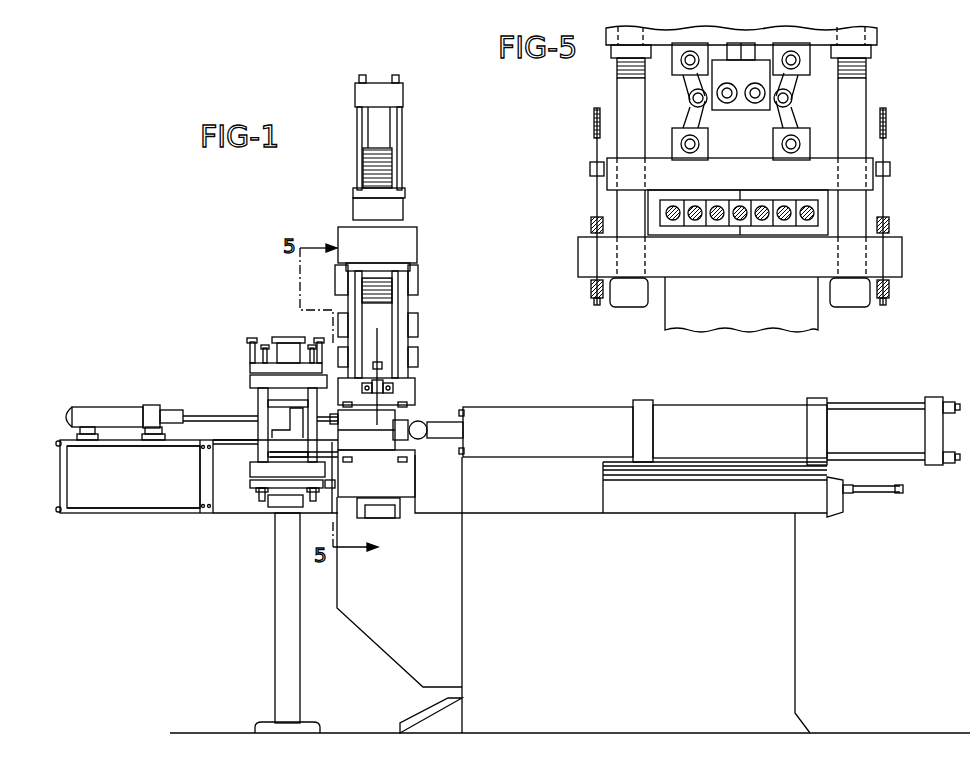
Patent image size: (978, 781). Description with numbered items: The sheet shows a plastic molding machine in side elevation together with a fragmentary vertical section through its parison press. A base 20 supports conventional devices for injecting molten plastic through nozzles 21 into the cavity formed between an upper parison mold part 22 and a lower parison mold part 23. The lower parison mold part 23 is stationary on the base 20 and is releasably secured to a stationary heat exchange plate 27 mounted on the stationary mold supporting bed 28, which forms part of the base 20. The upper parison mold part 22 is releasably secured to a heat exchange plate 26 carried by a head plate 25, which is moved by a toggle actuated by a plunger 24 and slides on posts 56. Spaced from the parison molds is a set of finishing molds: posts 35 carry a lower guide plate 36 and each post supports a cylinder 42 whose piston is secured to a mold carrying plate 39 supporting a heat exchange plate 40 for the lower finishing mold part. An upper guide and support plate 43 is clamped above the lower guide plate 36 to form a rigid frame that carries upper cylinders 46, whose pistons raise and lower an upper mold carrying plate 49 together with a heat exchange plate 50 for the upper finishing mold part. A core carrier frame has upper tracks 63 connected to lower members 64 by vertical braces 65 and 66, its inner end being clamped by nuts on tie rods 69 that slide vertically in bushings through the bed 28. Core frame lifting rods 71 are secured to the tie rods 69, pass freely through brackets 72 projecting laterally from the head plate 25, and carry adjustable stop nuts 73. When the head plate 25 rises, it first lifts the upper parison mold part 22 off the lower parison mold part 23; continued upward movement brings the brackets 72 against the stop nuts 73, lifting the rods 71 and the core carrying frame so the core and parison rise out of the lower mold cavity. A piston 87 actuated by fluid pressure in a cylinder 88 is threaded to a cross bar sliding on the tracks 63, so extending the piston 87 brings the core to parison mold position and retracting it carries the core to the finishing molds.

In FIG. 1, the base 20 is at (397, 652).
In FIG. 5, the base 20 is at (777, 328).
In FIG. 1, the nozzle 21 is at (420, 440).
In FIG. 1, the upper parison mold part 22 is at (412, 412).
In FIG. 5, the upper parison mold part 22 is at (693, 204).
In FIG. 1, the lower parison mold part 23 is at (393, 458).
In FIG. 5, the lower parison mold part 23 is at (717, 224).
In FIG. 5, the plunger 24 is at (740, 100).
In FIG. 1, the head plate 25 is at (412, 395).
In FIG. 5, the head plate 25 is at (753, 172).
In FIG. 5, the heat exchange plate 26 is at (808, 190).
In FIG. 5, the stationary heat exchange plate 27 is at (770, 230).
In FIG. 1, the stationary mold supporting bed 28 is at (388, 497).
In FIG. 5, the stationary mold supporting bed 28 is at (726, 268).
In FIG. 1, the posts 35 is at (282, 683).
In FIG. 1, the lower guide plate 36 is at (262, 503).
In FIG. 1, the mold carrying plate 39 is at (250, 482).
In FIG. 1, the heat exchange plate 40 is at (250, 470).
In FIG. 1, the cylinder 42 is at (283, 505).
In FIG. 1, the upper guide and support plate 43 is at (250, 362).
In FIG. 1, the upper cylinders 46 is at (284, 345).
In FIG. 1, the upper mold carrying plate 49 is at (250, 371).
In FIG. 1, the heat exchange plate 50 is at (250, 386).
In FIG. 1, the posts 56 is at (390, 285).
In FIG. 5, the posts 56 is at (625, 98).
In FIG. 1, the tracks 63 is at (115, 445).
In FIG. 5, the tracks 63 is at (590, 226).
In FIG. 1, the lower members 64 is at (120, 513).
In FIG. 5, the lower members 64 is at (592, 298).
In FIG. 1, the brace 65 is at (62, 470).
In FIG. 1, the brace 66 is at (208, 515).
In FIG. 1, the tie rods 69 is at (388, 503).
In FIG. 5, the tie rods 69 is at (592, 288).
In FIG. 1, the core frame lifting rods 71 is at (380, 340).
In FIG. 5, the core frame lifting rods 71 is at (886, 192).
In FIG. 1, the brackets 72 is at (393, 380).
In FIG. 5, the brackets 72 is at (589, 170).
In FIG. 1, the stop nuts 73 is at (382, 364).
In FIG. 5, the stop nuts 73 is at (594, 141).
In FIG. 1, the piston 87 is at (186, 413).
In FIG. 1, the cylinder 88 is at (106, 411).